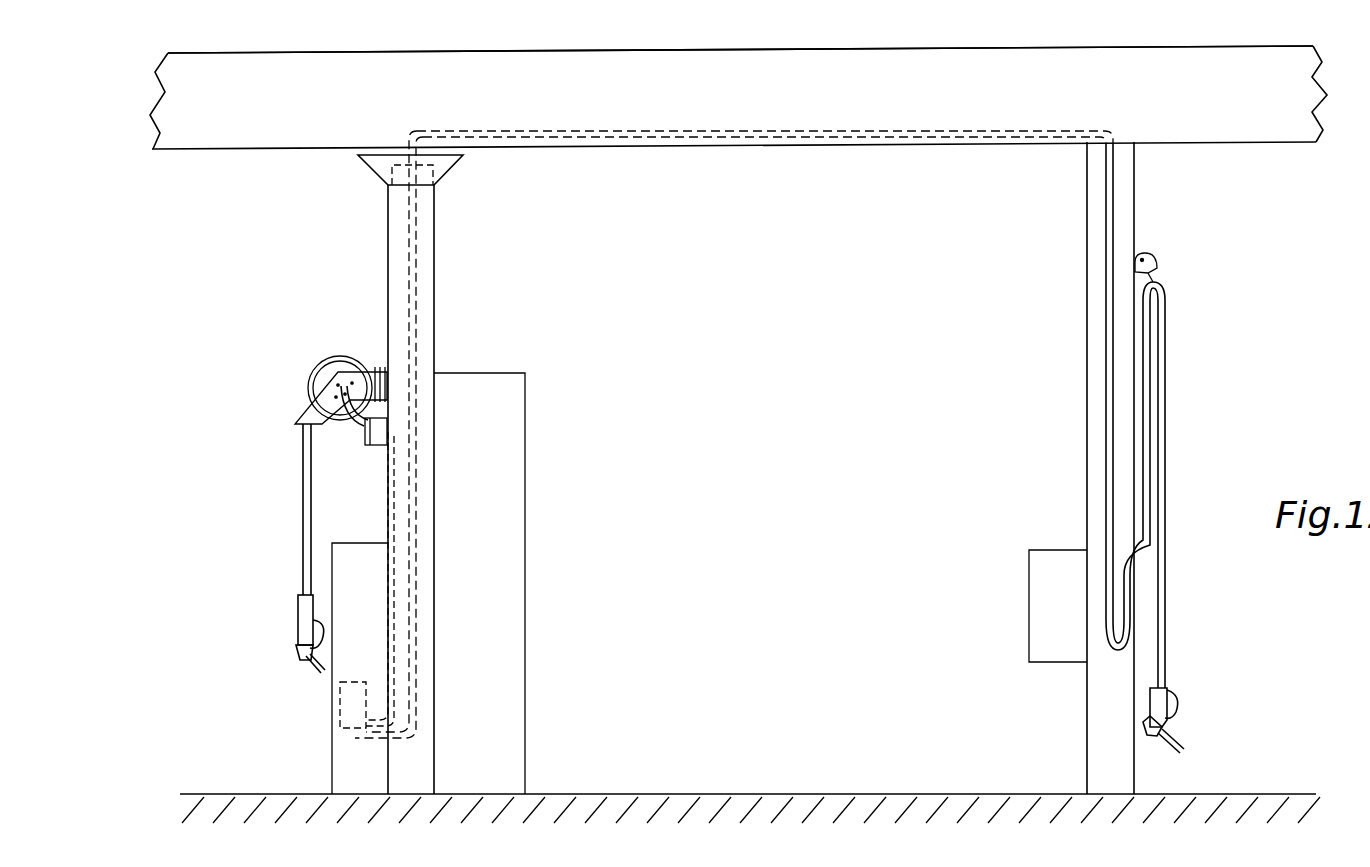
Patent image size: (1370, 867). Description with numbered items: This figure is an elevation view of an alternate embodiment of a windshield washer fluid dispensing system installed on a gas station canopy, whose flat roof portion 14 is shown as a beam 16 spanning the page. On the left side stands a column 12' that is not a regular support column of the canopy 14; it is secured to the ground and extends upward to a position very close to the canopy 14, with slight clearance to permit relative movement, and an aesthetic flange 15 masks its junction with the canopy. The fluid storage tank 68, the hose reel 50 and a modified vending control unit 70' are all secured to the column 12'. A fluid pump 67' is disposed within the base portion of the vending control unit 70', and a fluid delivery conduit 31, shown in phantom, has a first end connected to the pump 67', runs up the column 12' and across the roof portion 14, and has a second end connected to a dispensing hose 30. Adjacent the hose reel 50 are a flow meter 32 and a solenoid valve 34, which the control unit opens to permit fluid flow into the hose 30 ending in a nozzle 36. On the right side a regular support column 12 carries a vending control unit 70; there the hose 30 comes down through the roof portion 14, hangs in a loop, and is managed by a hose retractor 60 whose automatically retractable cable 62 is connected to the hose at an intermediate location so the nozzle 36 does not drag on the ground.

The roof portion 14 is at (597, 40).
The overhead beam 16 is at (1040, 58).
The aesthetic flange 15 is at (452, 163).
The column 12' is at (445, 489).
The support column 12 is at (1072, 468).
The fluid delivery conduit 31 is at (752, 142).
The fluid storage tank 68 is at (525, 470).
The vending control unit 70' is at (330, 668).
The fluid pump 67' is at (322, 705).
The vending control unit 70 is at (1050, 586).
The hose reel 50 is at (295, 420).
The solenoid valve 34 is at (363, 446).
The flow meter 32 is at (380, 448).
The dispensing hose 30 is at (352, 432).
The hose retractor 60 is at (1150, 258).
The retractable cable 62 is at (1158, 270).
The nozzle 36 is at (297, 612).